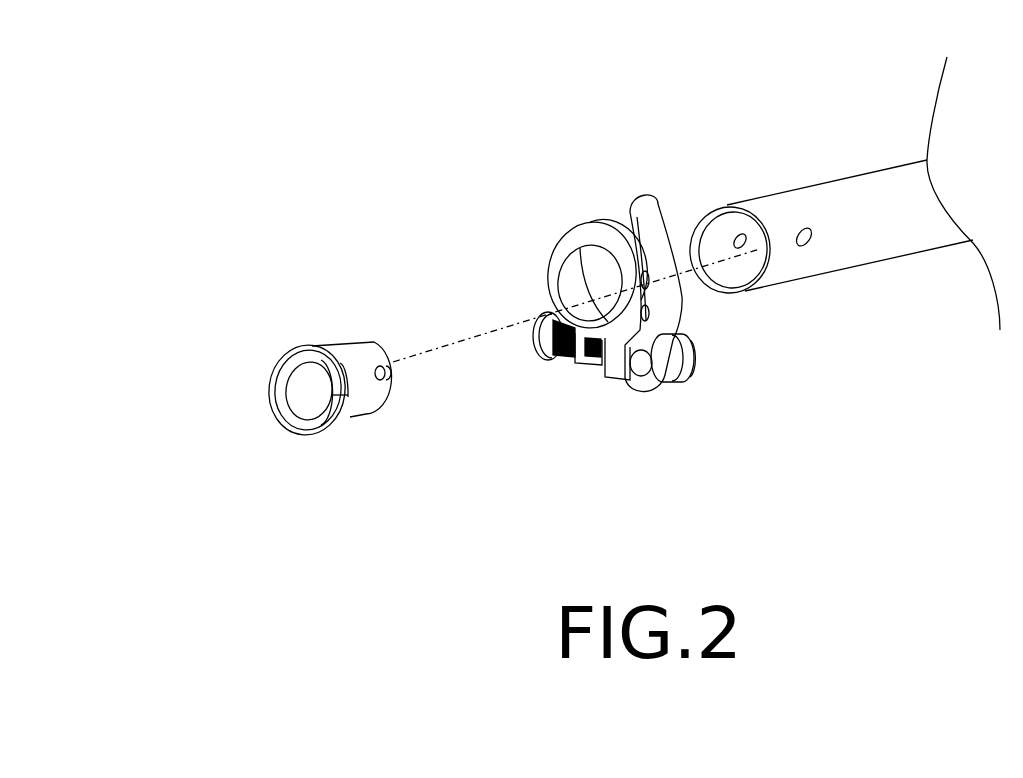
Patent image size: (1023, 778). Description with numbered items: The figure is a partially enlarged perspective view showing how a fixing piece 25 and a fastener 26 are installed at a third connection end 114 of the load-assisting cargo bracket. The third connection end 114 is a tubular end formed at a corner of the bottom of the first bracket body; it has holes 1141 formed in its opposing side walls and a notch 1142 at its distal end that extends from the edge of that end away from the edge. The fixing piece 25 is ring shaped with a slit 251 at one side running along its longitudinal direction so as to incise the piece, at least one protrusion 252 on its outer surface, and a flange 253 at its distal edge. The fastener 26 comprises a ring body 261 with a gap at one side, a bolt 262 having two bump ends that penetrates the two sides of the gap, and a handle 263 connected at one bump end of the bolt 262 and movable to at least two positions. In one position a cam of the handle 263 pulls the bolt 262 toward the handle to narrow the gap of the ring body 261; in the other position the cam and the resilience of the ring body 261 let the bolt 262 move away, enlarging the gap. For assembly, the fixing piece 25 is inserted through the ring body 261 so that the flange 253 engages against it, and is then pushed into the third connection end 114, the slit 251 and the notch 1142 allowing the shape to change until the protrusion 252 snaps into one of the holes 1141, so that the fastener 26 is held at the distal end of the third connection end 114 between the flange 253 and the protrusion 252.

The fixing piece 25 is at (350, 381).
The slit 251 is at (342, 338).
The protrusion 252 is at (390, 376).
The flange 253 is at (280, 422).
The fastener 26 is at (639, 301).
The ring body 261 is at (555, 242).
The bolt 262 is at (548, 358).
The handle 263 is at (648, 232).
The third connection end 114 is at (843, 213).
The hole 1141 is at (806, 232).
The notch 1142 is at (738, 292).